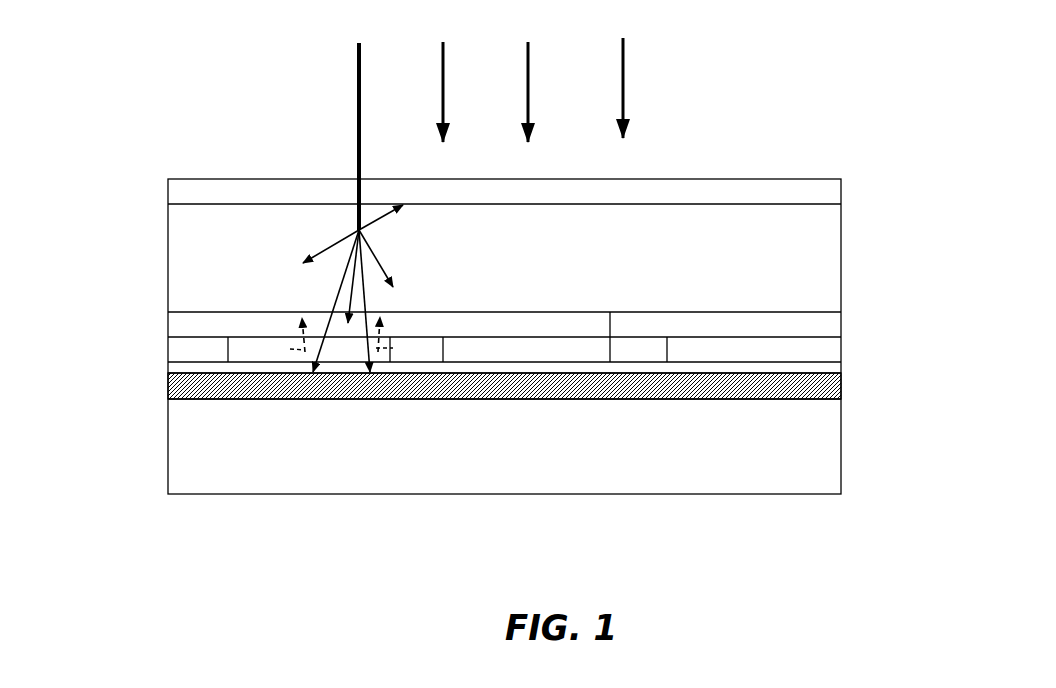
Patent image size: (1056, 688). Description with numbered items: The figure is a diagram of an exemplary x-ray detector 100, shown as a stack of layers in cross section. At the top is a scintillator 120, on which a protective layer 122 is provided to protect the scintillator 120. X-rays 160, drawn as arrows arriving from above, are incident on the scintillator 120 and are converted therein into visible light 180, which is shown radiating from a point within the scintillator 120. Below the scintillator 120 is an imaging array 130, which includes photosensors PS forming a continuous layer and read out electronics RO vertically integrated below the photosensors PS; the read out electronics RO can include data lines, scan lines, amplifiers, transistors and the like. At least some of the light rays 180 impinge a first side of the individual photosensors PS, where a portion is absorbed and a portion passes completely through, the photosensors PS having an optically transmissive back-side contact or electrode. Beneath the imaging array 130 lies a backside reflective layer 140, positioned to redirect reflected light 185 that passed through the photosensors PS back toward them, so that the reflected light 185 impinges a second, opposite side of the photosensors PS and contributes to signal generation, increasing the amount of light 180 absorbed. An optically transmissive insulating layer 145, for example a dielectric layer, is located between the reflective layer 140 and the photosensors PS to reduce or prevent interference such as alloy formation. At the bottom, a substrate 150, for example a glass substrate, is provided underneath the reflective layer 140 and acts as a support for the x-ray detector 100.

The x-ray detector 100 is at (1035, 127).
The scintillator 120 is at (841, 226).
The protective layer 122 is at (841, 190).
The imaging array 130 is at (847, 312).
The reflective layer 140 is at (841, 382).
The optically transmissive insulating layer 145 is at (841, 363).
The substrate 150 is at (841, 420).
The x-rays 160 is at (550, 134).
The visible light 180 is at (416, 288).
The reflected light 185 is at (297, 350).